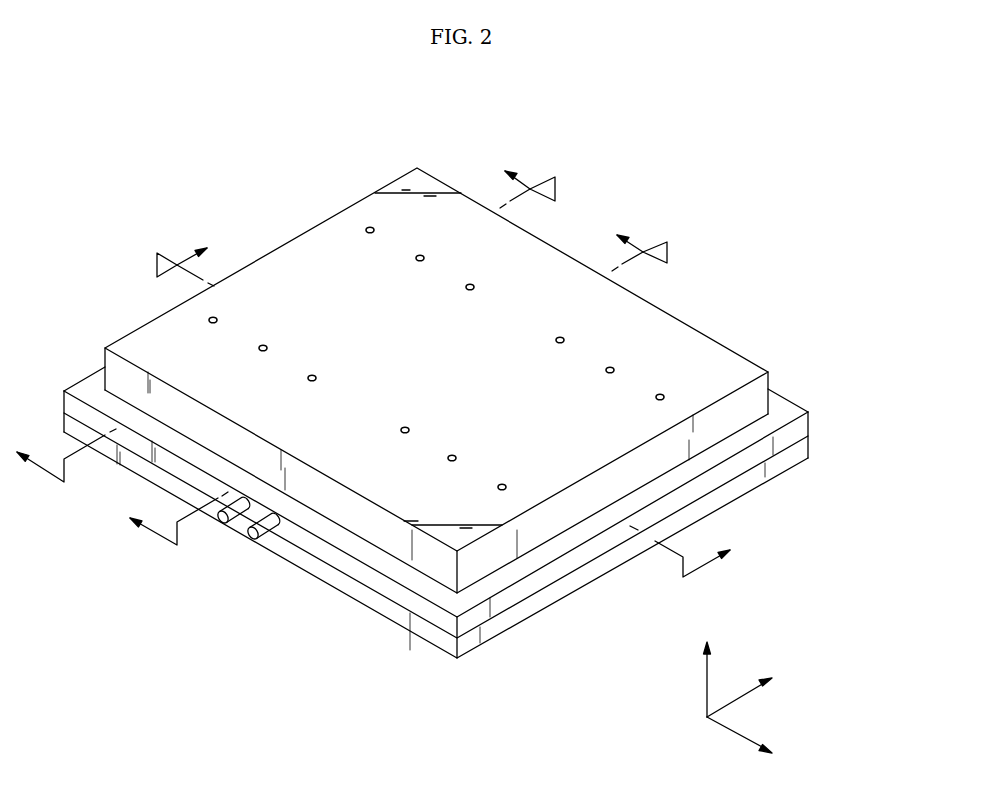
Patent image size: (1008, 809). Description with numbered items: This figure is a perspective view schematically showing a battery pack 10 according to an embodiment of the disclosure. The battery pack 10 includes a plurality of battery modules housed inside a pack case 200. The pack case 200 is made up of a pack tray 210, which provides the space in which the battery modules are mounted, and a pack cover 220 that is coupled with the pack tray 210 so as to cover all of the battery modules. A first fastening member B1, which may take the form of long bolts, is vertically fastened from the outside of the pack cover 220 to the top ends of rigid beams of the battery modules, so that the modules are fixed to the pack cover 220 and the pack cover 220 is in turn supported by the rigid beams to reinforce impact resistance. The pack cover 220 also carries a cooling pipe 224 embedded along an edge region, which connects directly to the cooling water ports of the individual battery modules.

The battery pack 10 is at (140, 112).
The pack case 200 is at (867, 370).
The pack tray 210 is at (800, 452).
The pack cover 220 is at (752, 402).
The cooling pipe 224 is at (268, 533).
The first fastening member B1 is at (422, 255).